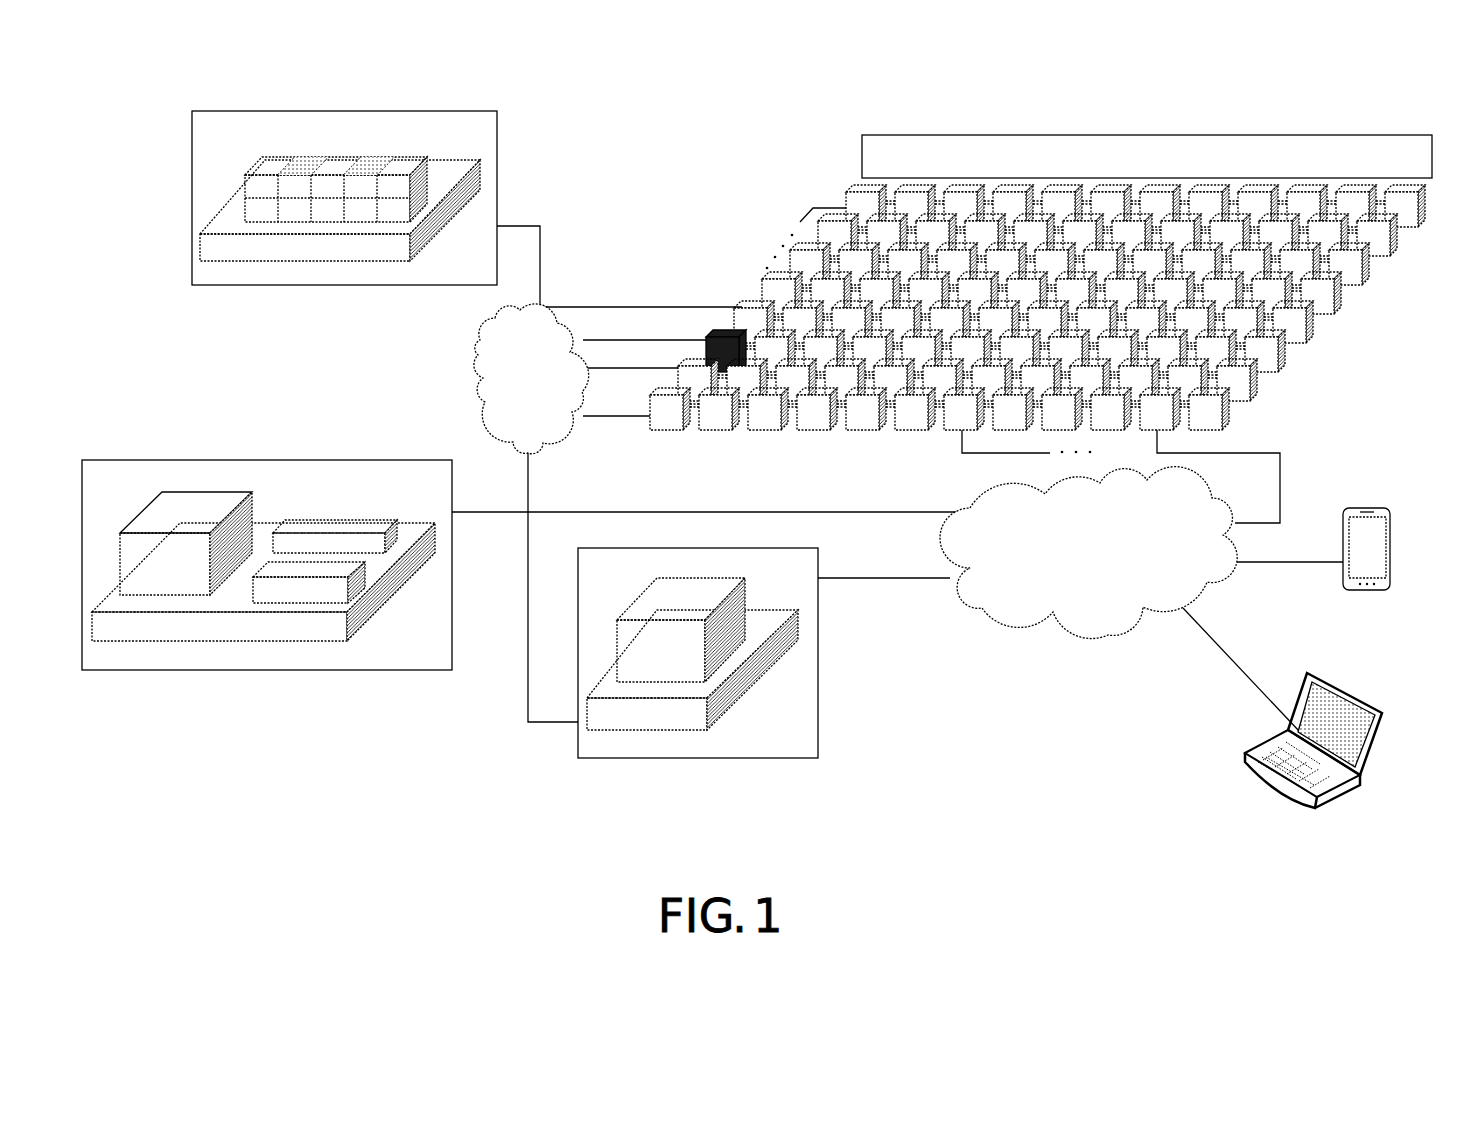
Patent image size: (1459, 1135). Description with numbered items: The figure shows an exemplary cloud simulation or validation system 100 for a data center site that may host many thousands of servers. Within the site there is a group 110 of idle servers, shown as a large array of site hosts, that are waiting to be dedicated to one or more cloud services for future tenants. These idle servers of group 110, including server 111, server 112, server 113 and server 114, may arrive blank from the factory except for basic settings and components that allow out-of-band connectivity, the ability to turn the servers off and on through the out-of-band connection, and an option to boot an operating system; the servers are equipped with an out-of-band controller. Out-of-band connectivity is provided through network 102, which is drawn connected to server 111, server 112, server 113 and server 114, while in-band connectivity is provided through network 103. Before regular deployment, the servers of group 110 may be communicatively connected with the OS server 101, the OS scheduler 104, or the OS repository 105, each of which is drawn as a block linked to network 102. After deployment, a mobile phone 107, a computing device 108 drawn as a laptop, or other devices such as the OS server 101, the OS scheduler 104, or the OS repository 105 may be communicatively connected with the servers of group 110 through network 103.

The cloud simulation or validation system 100 is at (262, 843).
The OS server 101 is at (820, 723).
The network 102 is at (477, 365).
The network 103 is at (1108, 635).
The OS scheduler 104 is at (288, 460).
The OS repository 105 is at (380, 111).
The mobile phone 107 is at (1365, 508).
The computing device 108 is at (1360, 698).
The group 110 is at (1012, 262).
The server 111 is at (668, 398).
The server 112 is at (698, 368).
The server 113 is at (718, 330).
The server 114 is at (748, 306).